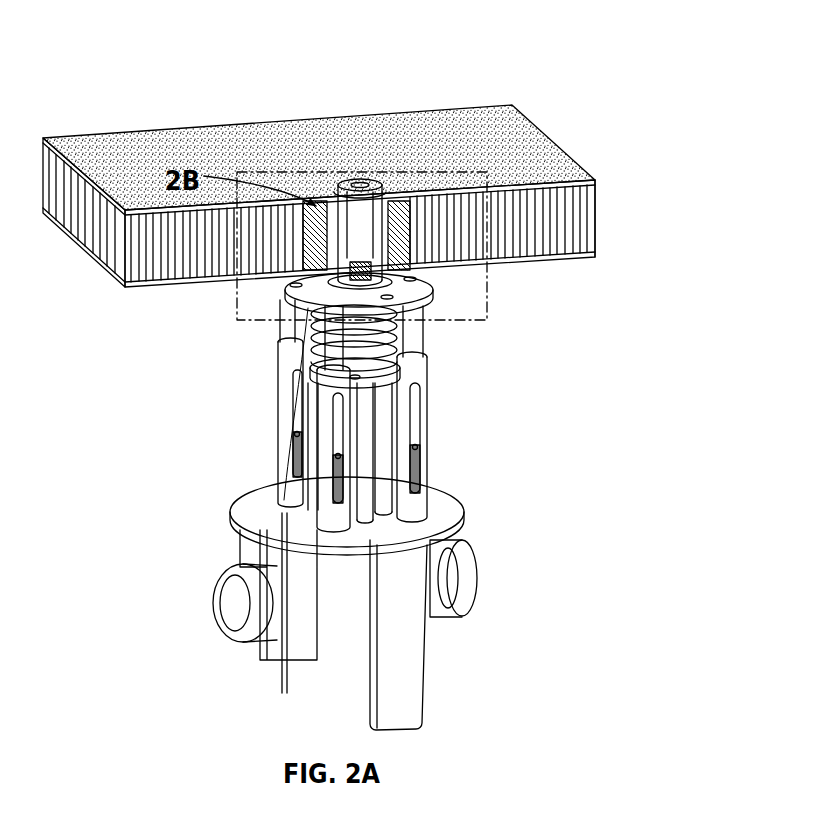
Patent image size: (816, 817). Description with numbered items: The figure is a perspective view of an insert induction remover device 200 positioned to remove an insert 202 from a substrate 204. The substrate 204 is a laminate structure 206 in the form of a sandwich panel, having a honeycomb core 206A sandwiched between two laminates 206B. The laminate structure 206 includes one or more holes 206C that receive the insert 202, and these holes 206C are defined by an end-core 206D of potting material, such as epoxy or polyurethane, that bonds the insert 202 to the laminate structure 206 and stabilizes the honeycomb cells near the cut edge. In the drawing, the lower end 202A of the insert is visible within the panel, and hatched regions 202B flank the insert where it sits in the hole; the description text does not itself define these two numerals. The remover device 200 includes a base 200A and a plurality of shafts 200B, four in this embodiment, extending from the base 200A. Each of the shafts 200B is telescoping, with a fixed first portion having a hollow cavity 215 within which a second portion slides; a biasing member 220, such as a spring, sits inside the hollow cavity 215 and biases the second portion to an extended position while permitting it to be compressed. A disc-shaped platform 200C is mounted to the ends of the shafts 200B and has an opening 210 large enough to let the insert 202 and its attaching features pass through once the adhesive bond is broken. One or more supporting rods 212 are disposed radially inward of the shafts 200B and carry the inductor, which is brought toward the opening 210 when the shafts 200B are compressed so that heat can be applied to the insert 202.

The insert induction remover device 200 is at (431, 671).
The base 200A is at (420, 565).
The plurality of shafts 200B is at (418, 481).
The platform 200C is at (317, 282).
The insert 202 is at (330, 195).
The lower end of insert 202A is at (347, 250).
The potting material 202B is at (318, 203).
The substrate 204 is at (603, 209).
The laminate structure 206 is at (590, 148).
The honeycomb core 206A is at (552, 242).
The laminates 206B is at (508, 155).
The holes 206C is at (310, 237).
The end-core 206D is at (383, 188).
The opening 210 is at (432, 299).
The supporting rods 212 is at (460, 527).
The hollow cavity 215 is at (420, 415).
The biasing member 220 is at (276, 482).